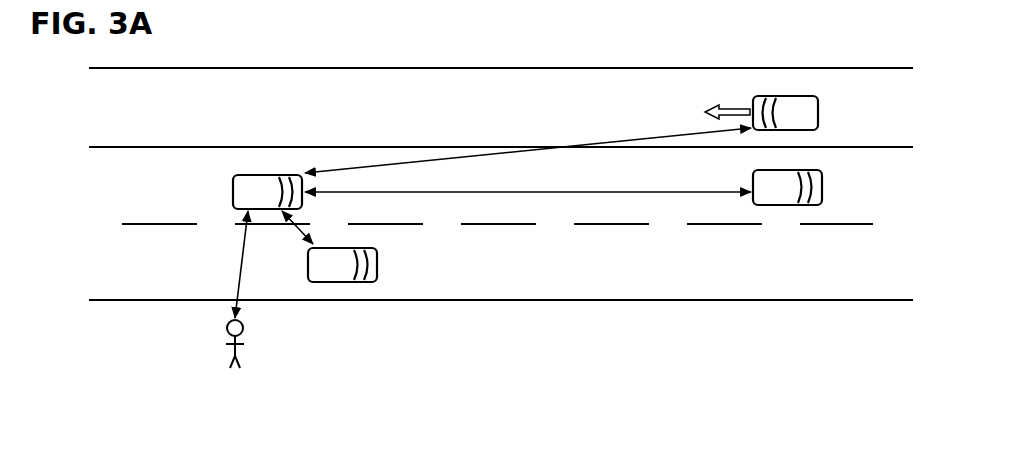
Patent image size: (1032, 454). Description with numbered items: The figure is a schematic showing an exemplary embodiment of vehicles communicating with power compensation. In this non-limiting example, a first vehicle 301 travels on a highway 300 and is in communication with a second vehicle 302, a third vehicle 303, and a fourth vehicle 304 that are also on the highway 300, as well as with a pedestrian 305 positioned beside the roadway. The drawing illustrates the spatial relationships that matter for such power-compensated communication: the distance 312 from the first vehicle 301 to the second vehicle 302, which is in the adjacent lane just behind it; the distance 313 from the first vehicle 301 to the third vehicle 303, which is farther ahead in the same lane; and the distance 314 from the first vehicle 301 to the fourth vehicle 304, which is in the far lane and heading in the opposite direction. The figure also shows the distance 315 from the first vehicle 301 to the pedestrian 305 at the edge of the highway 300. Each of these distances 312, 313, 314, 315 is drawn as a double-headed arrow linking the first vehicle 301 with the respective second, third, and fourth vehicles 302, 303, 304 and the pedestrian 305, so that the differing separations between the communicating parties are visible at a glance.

The highway 300 is at (443, 68).
The first vehicle 301 is at (257, 175).
The second vehicle 302 is at (333, 283).
The third vehicle 303 is at (823, 183).
The fourth vehicle 304 is at (820, 112).
The pedestrian 305 is at (224, 327).
The distance from first vehicle to second vehicle 312 is at (303, 238).
The distance from first vehicle to third vehicle 313 is at (647, 192).
The distance from first vehicle to fourth vehicle 314 is at (628, 138).
The distance to pedestrian 315 is at (238, 262).